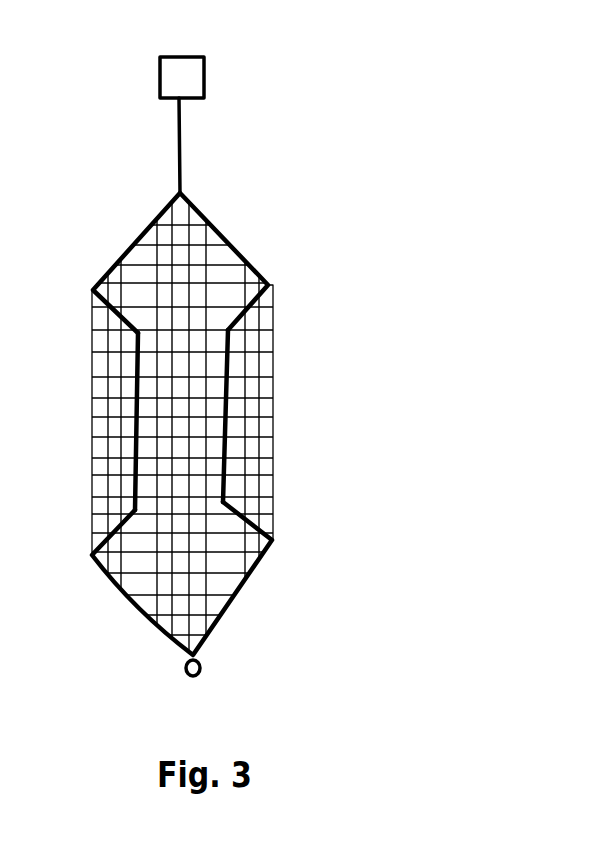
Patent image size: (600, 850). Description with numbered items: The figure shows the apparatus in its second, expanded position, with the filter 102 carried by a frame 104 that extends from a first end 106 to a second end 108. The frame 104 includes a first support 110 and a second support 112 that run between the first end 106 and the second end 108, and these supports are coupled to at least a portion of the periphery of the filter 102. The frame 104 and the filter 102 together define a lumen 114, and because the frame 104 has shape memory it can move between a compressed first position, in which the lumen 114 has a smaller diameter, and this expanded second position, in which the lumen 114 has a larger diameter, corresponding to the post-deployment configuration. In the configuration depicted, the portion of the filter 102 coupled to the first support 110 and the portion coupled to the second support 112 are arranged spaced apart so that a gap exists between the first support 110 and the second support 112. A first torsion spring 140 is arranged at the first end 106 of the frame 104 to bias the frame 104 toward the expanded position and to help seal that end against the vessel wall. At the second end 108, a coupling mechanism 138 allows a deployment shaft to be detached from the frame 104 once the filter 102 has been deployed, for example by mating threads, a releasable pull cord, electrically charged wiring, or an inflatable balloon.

The filter 102 is at (105, 410).
The frame 104 is at (137, 218).
The first end 106 is at (172, 658).
The second end 108 is at (160, 182).
The first support 110 is at (110, 267).
The second support 112 is at (235, 250).
The lumen 114 is at (200, 373).
The coupling mechanism 138 is at (200, 62).
The first torsion spring 140 is at (201, 670).